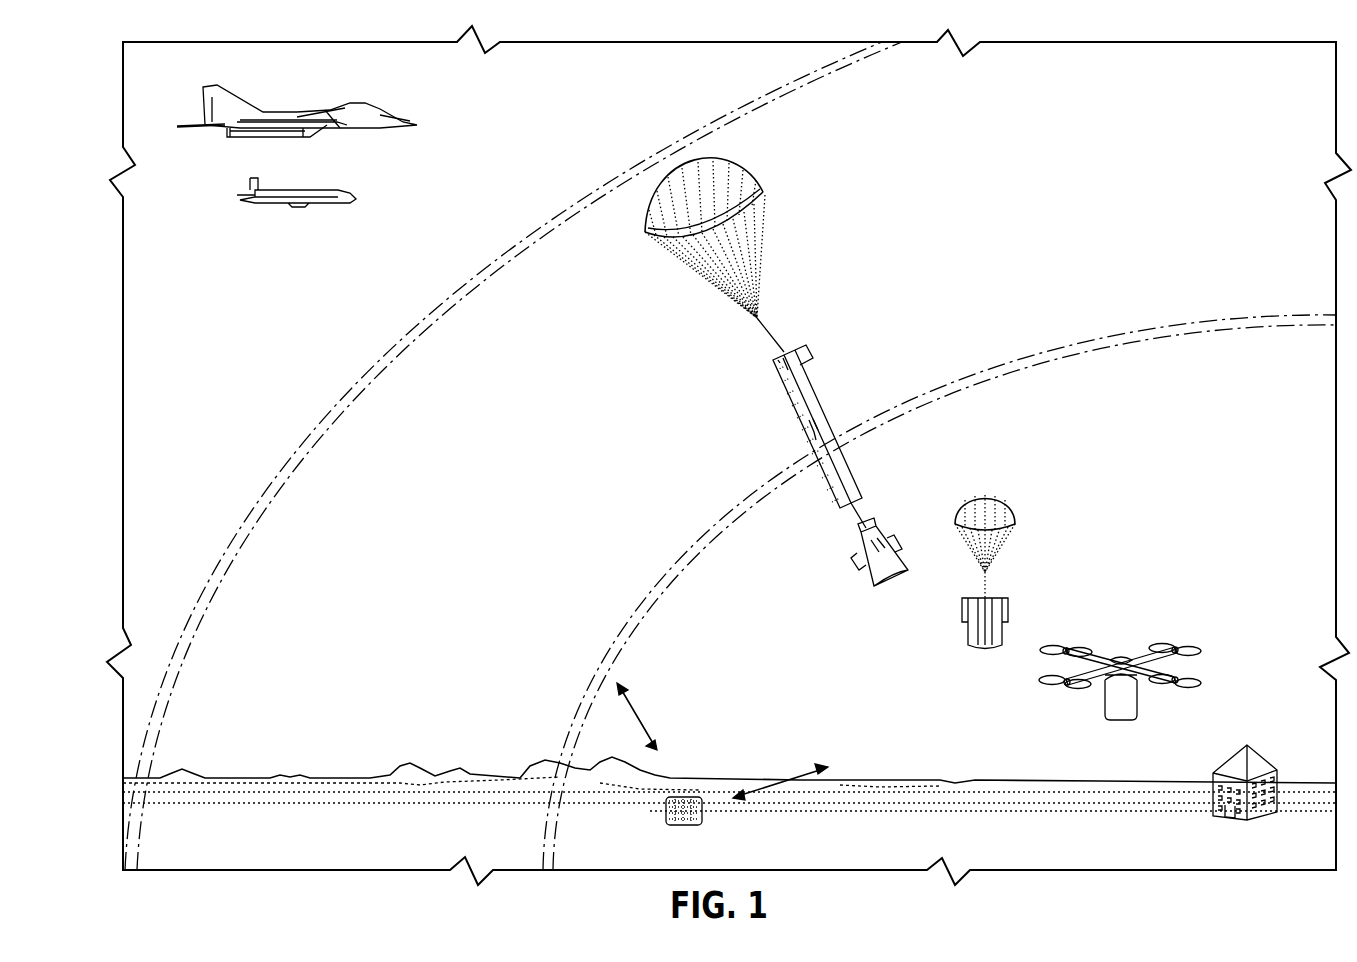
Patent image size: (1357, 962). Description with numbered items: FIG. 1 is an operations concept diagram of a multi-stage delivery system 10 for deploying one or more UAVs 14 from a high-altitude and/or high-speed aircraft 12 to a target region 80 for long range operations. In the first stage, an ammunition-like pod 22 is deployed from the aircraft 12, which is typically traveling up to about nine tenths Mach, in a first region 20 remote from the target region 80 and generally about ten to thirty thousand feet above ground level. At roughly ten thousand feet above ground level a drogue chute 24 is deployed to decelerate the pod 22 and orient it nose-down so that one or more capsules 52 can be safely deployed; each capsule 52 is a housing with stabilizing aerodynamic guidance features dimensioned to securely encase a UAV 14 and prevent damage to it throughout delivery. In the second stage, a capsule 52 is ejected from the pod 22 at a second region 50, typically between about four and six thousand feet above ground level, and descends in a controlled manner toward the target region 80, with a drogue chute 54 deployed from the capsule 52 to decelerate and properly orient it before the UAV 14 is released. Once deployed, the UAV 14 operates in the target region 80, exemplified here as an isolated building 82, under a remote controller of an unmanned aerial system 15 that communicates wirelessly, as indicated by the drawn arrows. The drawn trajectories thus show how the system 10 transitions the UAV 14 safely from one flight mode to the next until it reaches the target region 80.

The multi-stage delivery system 10 is at (1223, 35).
The aircraft 12 is at (375, 116).
The UAV 14 is at (1181, 643).
The unmanned aerial system 15 is at (703, 825).
The first region 20 is at (466, 235).
The pod 22 is at (345, 193).
The drogue chute 24 is at (755, 190).
The second region 50 is at (484, 316).
The capsule 52 is at (873, 588).
The drogue chute 54 is at (1000, 547).
The target region 80 is at (1255, 649).
The building 82 is at (1247, 746).